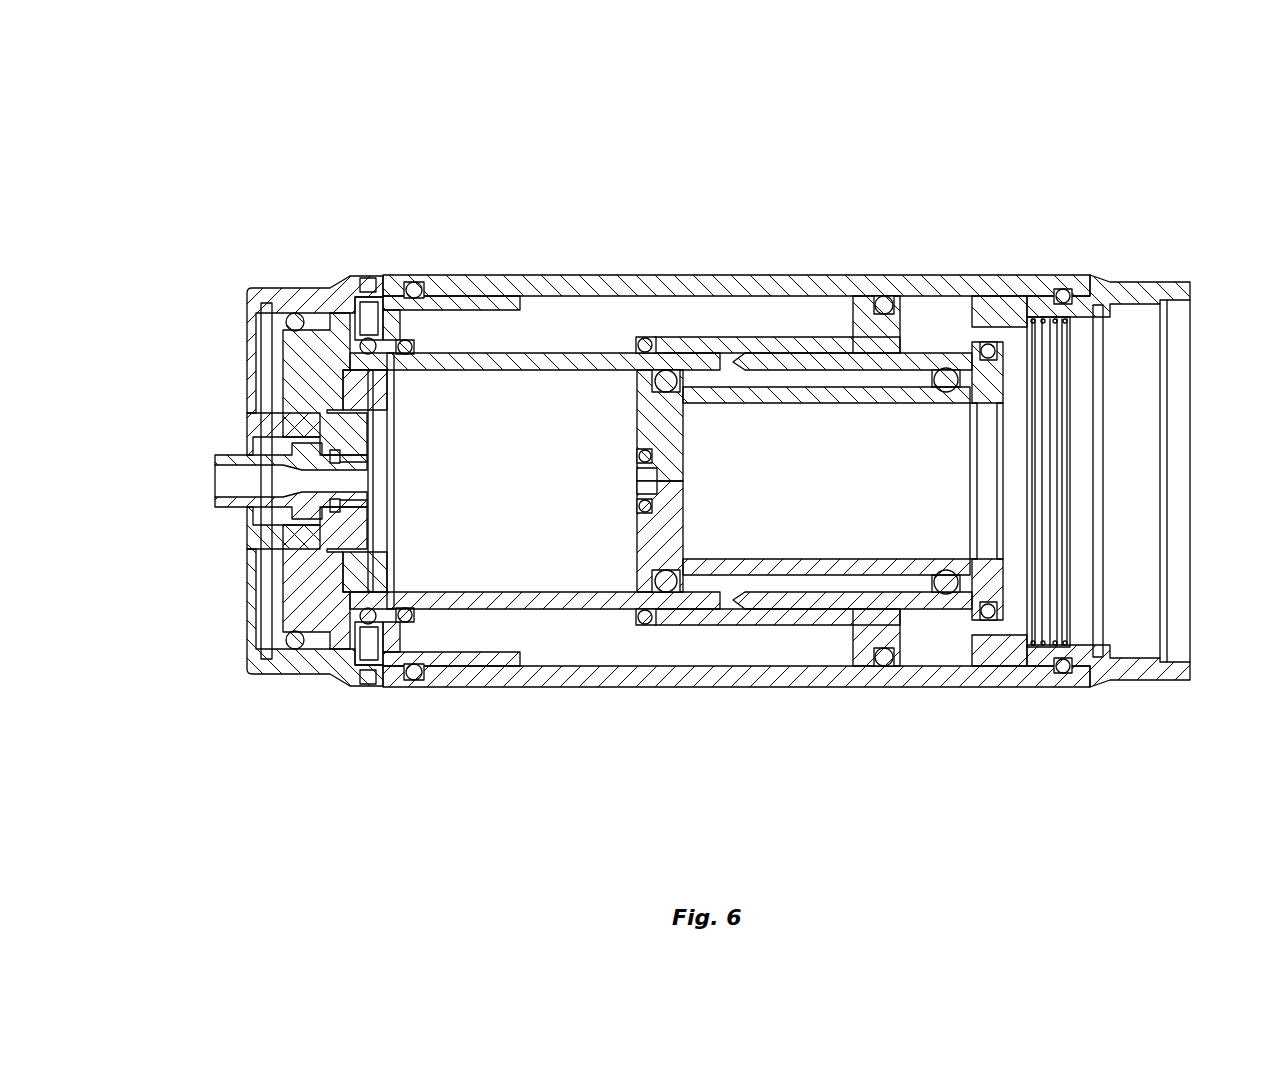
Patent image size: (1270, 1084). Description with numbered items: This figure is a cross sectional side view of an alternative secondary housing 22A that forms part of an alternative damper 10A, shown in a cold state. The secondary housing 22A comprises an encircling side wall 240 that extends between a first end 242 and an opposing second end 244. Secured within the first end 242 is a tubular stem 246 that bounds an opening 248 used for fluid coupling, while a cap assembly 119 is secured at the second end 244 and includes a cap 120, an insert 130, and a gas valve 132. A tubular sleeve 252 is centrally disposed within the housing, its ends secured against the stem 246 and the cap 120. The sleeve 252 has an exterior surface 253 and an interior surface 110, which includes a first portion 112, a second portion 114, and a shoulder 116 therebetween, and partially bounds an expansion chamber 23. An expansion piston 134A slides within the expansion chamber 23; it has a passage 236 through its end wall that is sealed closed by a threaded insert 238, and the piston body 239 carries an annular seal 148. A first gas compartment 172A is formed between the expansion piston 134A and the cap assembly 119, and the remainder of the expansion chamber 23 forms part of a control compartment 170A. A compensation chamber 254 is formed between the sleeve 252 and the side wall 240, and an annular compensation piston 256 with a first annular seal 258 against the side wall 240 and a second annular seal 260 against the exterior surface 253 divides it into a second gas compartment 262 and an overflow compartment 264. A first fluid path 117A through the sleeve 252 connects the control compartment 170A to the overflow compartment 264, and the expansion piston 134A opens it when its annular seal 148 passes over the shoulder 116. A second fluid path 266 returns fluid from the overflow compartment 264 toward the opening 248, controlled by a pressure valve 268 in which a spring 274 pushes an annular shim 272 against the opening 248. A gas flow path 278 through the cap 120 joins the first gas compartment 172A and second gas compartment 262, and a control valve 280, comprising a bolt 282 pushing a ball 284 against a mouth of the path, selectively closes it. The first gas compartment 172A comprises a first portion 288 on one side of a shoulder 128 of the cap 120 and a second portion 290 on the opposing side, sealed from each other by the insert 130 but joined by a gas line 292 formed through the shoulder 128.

The damper 10A is at (875, 122).
The secondary housing 22A is at (1012, 193).
The expansion chamber 23 is at (923, 523).
The interior surface 110 is at (905, 612).
The first portion 112 is at (532, 597).
The second portion 114 is at (832, 612).
The shoulder 116 is at (705, 600).
The first fluid path 117A is at (740, 345).
The cap assembly 119 is at (225, 602).
The cap 120 is at (278, 672).
The shoulder 128 is at (255, 625).
The insert 130 is at (285, 545).
The gas valve 132 is at (228, 452).
The expansion piston 134A is at (782, 547).
The annular seal 148 is at (650, 575).
The control compartment 170A is at (808, 438).
The first gas compartment 172A is at (485, 580).
The passage 236 is at (680, 513).
The insert 238 is at (677, 480).
The piston head 239 is at (662, 425).
The side wall 240 is at (547, 680).
The first end 242 is at (1047, 730).
The second end 244 is at (395, 705).
The tubular stem 246 is at (1127, 670).
The opening 248 is at (1137, 325).
The tubular sleeve 252 is at (790, 600).
The exterior surface 253 is at (868, 592).
The compensation chamber 254 is at (572, 290).
The compensation piston 256 is at (762, 342).
The first annular seal 258 is at (878, 296).
The second annular seal 260 is at (652, 335).
The second gas compartment 262 is at (476, 282).
The overflow compartment 264 is at (928, 320).
The second fluid path 266 is at (997, 333).
The pressure valve 268 is at (1082, 283).
The annular shim 272 is at (1045, 665).
The spring 274 is at (1053, 565).
The gas flow path 278 is at (400, 302).
The control valve 280 is at (368, 278).
The bolt 282 is at (365, 308).
The ball 284 is at (352, 340).
The first portion 288 is at (385, 645).
The second portion 290 is at (330, 672).
The gas line 292 is at (345, 350).